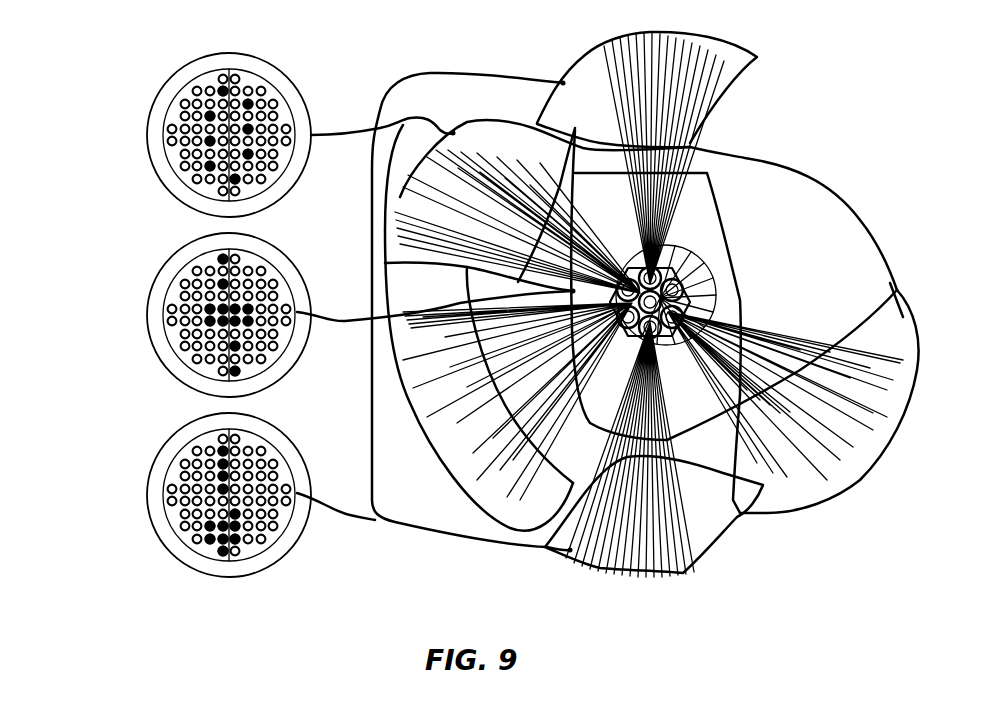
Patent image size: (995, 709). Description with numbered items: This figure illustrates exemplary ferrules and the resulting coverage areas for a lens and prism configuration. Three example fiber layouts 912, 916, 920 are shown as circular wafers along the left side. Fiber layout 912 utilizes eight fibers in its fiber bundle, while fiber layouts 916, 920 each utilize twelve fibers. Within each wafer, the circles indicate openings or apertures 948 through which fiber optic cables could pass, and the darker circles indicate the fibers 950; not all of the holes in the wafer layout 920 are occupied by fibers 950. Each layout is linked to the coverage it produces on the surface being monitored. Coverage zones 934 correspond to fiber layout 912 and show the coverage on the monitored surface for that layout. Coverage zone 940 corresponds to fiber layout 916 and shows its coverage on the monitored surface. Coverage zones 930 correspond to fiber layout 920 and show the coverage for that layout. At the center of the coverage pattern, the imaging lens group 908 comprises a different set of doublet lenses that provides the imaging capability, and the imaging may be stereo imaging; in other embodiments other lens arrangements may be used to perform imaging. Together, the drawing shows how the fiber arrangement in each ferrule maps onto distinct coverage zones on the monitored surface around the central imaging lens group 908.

The imaging lens group 908 is at (716, 297).
The fiber layout 912 is at (160, 86).
The fiber layout 916 is at (163, 262).
The fiber layout 920 is at (165, 442).
The coverage zones 930 is at (723, 73).
The coverage zones 934 is at (488, 133).
The coverage zone 940 is at (723, 217).
The apertures 948 is at (255, 75).
The fibers 950 is at (190, 178).